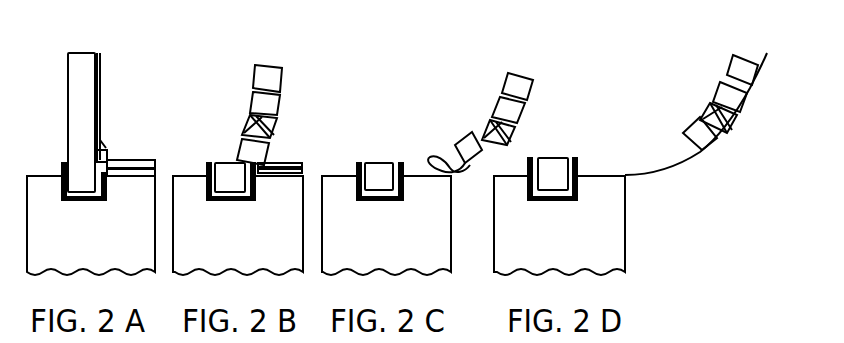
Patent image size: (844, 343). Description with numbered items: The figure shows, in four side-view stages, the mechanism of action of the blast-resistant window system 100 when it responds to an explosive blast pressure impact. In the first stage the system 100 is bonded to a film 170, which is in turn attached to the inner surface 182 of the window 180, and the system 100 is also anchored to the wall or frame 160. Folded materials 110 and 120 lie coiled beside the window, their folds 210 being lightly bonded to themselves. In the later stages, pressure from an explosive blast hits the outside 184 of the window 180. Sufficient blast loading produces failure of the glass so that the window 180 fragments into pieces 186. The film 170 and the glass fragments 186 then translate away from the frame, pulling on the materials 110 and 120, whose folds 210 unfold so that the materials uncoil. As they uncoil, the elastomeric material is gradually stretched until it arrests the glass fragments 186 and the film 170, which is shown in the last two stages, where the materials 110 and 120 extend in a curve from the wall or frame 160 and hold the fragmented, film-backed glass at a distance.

In FIG. 2A, the blast-resistant window system 100 is at (157, 159).
In FIG. 2D, the material 110 is at (709, 158).
In FIG. 2D, the material 120 is at (657, 174).
In FIG. 2A, the wall or frame 160 is at (108, 255).
In FIG. 2A, the film 170 is at (102, 114).
In FIG. 2B, the film 170 is at (282, 100).
In FIG. 2A, the window 180 is at (101, 62).
In FIG. 2A, the inner surface 182 is at (98, 78).
In FIG. 2A, the outside 184 is at (68, 103).
In FIG. 2B, the pieces 186 is at (241, 86).
In FIG. 2B, the folds 210 is at (307, 164).